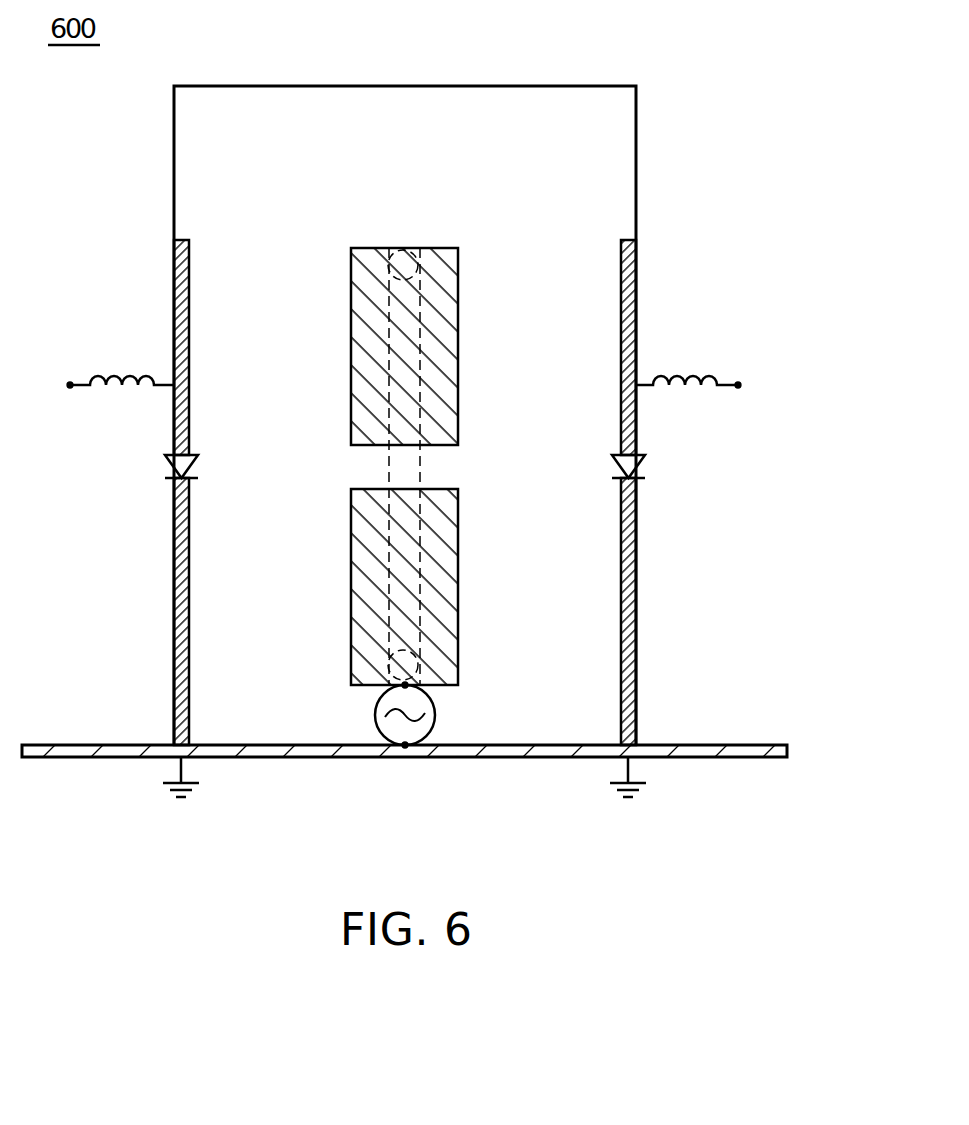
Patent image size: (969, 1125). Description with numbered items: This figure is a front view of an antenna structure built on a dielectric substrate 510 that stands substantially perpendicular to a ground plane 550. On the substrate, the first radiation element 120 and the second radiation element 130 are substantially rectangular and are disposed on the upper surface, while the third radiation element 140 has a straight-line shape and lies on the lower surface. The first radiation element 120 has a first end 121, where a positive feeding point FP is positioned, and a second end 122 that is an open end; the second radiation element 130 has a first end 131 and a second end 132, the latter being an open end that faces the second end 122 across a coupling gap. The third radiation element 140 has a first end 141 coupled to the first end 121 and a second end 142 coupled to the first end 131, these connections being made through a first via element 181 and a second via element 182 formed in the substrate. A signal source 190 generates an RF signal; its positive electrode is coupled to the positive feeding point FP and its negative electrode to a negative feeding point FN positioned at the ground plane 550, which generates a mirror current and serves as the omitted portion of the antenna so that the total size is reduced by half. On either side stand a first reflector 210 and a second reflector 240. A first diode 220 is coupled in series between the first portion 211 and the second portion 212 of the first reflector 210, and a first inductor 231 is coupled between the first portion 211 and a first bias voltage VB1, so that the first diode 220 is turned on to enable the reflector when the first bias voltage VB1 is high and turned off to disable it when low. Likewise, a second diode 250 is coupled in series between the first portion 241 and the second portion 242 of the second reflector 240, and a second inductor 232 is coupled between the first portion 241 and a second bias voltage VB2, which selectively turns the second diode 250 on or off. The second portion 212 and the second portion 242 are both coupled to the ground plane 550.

The dielectric substrate 510 is at (577, 103).
The ground plane 550 is at (735, 760).
The first reflector 210 is at (143, 492).
The first portion of the first reflector 211 is at (174, 432).
The second portion of the first reflector 212 is at (174, 622).
The first diode 220 is at (197, 466).
The first inductor 231 is at (123, 378).
The second inductor 232 is at (687, 378).
The second reflector 240 is at (667, 492).
The first portion of the second reflector 241 is at (636, 432).
The second portion of the second reflector 242 is at (636, 622).
The second diode 250 is at (612, 466).
The first radiation element 120 is at (448, 588).
The first end of the first radiation element 121 is at (442, 685).
The second end of the first radiation element 122 is at (442, 488).
The second radiation element 130 is at (448, 332).
The first end of the second radiation element 131 is at (455, 264).
The second end of the second radiation element 132 is at (442, 443).
The third radiation element 140 is at (405, 467).
The first end of the third radiation element 141 is at (395, 650).
The second end of the third radiation element 142 is at (395, 286).
The first via element 181 is at (388, 668).
The second via element 182 is at (388, 262).
The signal source 190 is at (438, 713).
The positive feeding point FP is at (392, 690).
The negative feeding point FN is at (392, 742).
The first bias voltage VB1 is at (68, 384).
The second bias voltage VB2 is at (757, 364).